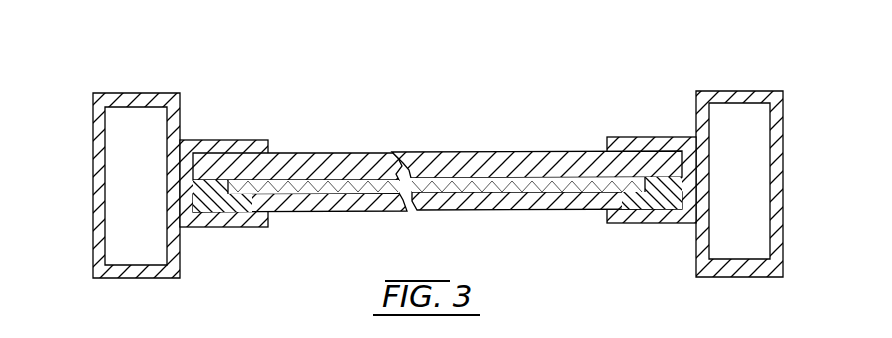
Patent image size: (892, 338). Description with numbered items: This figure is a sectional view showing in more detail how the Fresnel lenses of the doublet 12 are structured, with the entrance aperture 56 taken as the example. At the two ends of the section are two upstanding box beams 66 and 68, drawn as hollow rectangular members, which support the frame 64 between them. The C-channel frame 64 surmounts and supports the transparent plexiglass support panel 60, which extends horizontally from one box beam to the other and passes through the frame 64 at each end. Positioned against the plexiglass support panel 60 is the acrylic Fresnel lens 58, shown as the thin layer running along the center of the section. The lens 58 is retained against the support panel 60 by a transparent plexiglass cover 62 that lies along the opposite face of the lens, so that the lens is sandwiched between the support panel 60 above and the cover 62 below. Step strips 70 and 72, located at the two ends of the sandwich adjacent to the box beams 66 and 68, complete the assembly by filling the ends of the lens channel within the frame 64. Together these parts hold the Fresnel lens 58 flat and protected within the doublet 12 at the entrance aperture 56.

The doublet 12 is at (414, 157).
The entrance aperture 56 is at (437, 159).
The acrylic Fresnel lens 58 is at (287, 186).
The transparent plexiglass support panel 60 is at (350, 162).
The transparent plexiglass cover 62 is at (338, 206).
The C-channel frame 64 is at (210, 137).
The upstanding box beam 66 is at (723, 90).
The upstanding box beam 68 is at (133, 92).
The step strip 70 is at (660, 203).
The step strip 72 is at (213, 202).